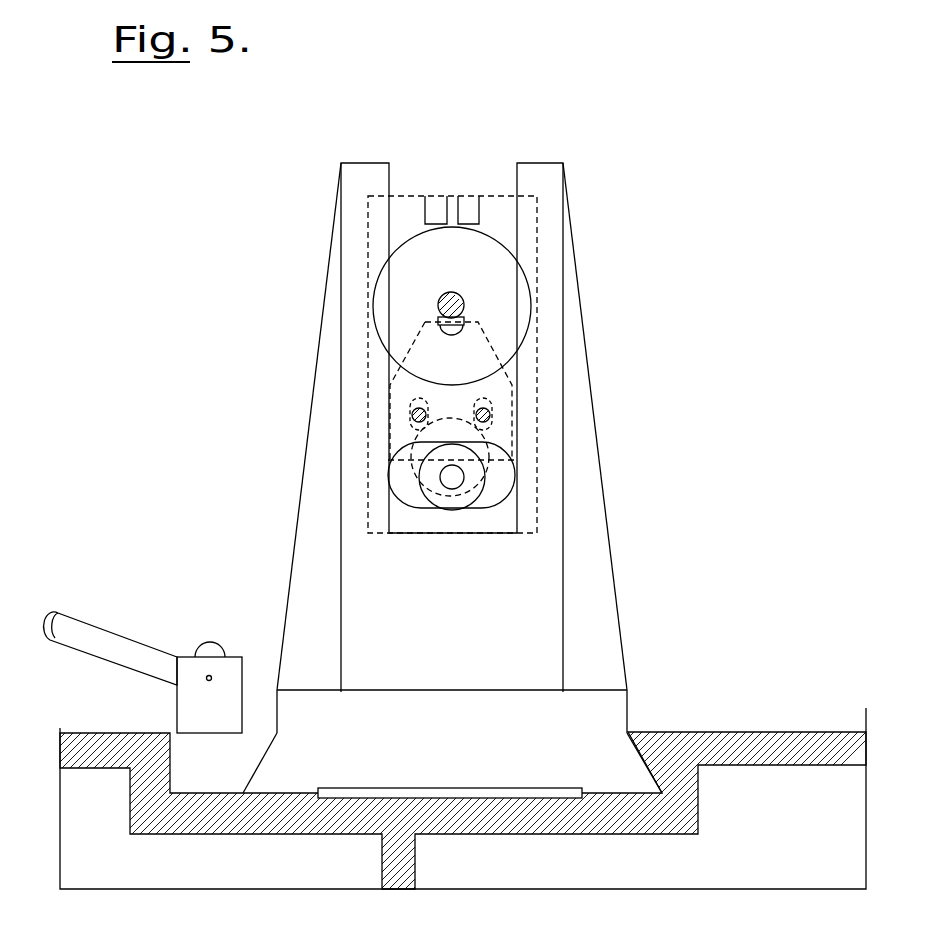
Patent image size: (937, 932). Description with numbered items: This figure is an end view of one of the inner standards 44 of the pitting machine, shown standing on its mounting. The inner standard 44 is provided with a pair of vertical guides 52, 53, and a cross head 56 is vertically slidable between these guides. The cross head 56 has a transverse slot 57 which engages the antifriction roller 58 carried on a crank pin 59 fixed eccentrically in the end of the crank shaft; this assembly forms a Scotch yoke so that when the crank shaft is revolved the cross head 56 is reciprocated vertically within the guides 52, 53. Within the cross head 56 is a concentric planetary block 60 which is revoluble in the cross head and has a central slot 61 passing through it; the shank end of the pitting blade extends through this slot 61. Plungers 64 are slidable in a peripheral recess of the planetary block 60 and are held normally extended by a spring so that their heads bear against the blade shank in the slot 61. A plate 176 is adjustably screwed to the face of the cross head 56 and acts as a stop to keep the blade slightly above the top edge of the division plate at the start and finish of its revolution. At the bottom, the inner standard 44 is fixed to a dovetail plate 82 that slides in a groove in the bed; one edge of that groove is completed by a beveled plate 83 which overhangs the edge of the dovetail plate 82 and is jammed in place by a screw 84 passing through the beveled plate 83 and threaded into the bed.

The inner standard 44 is at (598, 635).
The vertical guide 52 is at (350, 467).
The vertical guide 53 is at (548, 422).
The cross head 56 is at (502, 212).
The transverse slot 57 is at (488, 495).
The antifriction roller 58 is at (452, 503).
The crank pin 59 is at (445, 478).
The planetary block 60 is at (417, 245).
The central slot 61 is at (463, 317).
The plunger 64 is at (440, 320).
The dovetail plate 82 is at (610, 752).
The beveled plate 83 is at (240, 764).
The screw 84 is at (182, 697).
The plate 176 is at (500, 385).